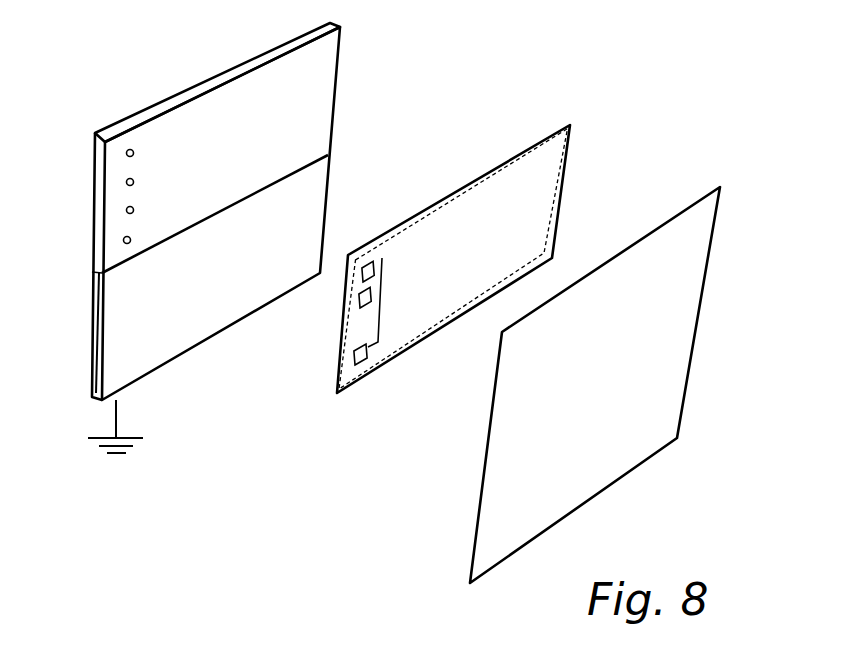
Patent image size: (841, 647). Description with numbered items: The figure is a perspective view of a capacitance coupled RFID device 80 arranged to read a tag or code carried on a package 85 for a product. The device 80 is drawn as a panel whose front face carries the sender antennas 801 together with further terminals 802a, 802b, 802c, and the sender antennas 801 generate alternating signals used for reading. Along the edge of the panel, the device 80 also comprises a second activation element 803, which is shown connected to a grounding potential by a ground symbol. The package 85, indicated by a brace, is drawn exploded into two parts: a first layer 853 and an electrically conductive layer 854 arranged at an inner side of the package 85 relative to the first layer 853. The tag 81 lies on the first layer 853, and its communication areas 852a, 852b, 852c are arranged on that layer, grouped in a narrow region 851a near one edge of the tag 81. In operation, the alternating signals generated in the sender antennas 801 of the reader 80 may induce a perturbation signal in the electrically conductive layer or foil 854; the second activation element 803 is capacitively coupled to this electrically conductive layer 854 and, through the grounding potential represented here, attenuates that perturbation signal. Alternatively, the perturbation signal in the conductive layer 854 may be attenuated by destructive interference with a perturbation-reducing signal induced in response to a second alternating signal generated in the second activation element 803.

The capacitance coupled RFID device 80 is at (162, 82).
The sender antennas 801 is at (134, 153).
The second electrode terminal 802a is at (134, 182).
The second electrode terminal 802b is at (134, 210).
The second electrode terminal 802c is at (131, 243).
The second activation element 803 is at (97, 326).
The package 85 is at (721, 165).
The tag 81 is at (441, 277).
The first layer 853 is at (553, 227).
The terminal strip 851a is at (370, 262).
The communication area 852a is at (360, 302).
The communication area 852b is at (362, 328).
The communication area 852c is at (363, 358).
The electrically conductive layer 854 is at (663, 347).